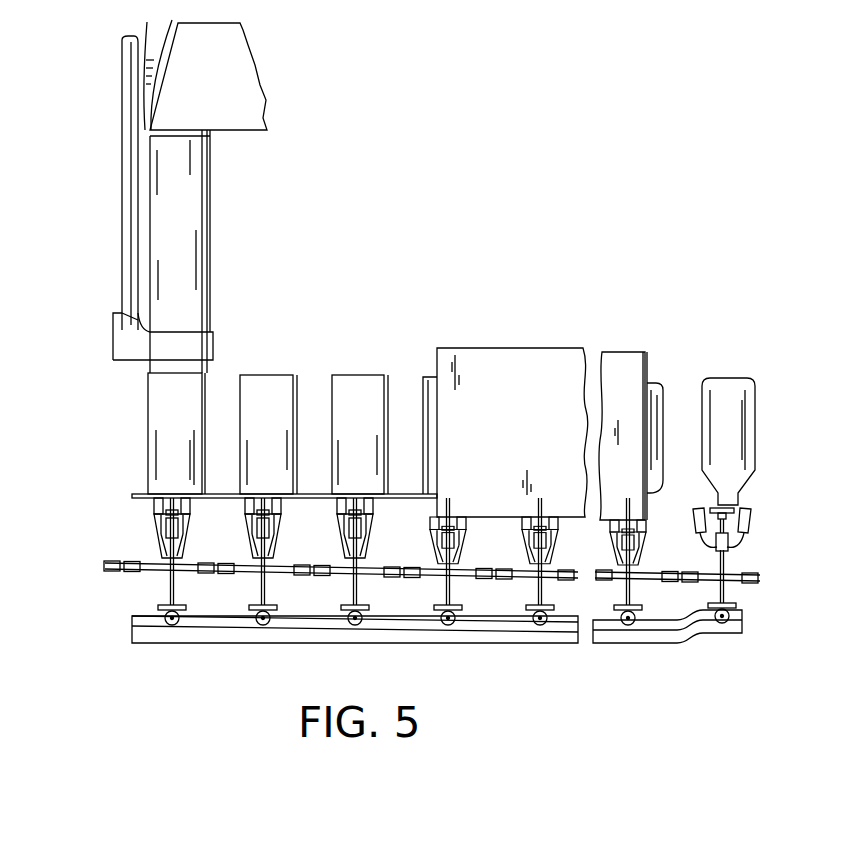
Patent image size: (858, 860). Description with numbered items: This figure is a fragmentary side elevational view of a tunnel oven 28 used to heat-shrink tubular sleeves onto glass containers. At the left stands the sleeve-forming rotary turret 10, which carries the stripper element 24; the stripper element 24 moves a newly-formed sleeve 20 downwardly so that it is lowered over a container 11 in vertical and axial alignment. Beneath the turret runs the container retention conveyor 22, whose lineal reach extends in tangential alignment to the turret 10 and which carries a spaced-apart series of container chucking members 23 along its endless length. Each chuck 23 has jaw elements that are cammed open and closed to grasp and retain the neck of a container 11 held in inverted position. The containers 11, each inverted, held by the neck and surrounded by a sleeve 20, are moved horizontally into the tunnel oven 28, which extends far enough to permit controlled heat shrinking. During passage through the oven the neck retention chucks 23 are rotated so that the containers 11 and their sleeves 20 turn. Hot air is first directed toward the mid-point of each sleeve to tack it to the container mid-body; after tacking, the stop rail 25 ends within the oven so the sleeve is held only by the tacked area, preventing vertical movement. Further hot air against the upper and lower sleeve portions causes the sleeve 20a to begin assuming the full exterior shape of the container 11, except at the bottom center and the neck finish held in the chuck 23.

The sleeve-forming rotary turret 10 is at (220, 196).
The stripper element 24 is at (214, 342).
The sleeve 20 is at (148, 425).
The stop rail 25 is at (134, 495).
The container chucking member 23 is at (143, 518).
The container retention conveyor 22 is at (231, 648).
The tunnel oven 28 is at (495, 348).
The container 11 is at (748, 376).
The sleeve 20a is at (772, 415).